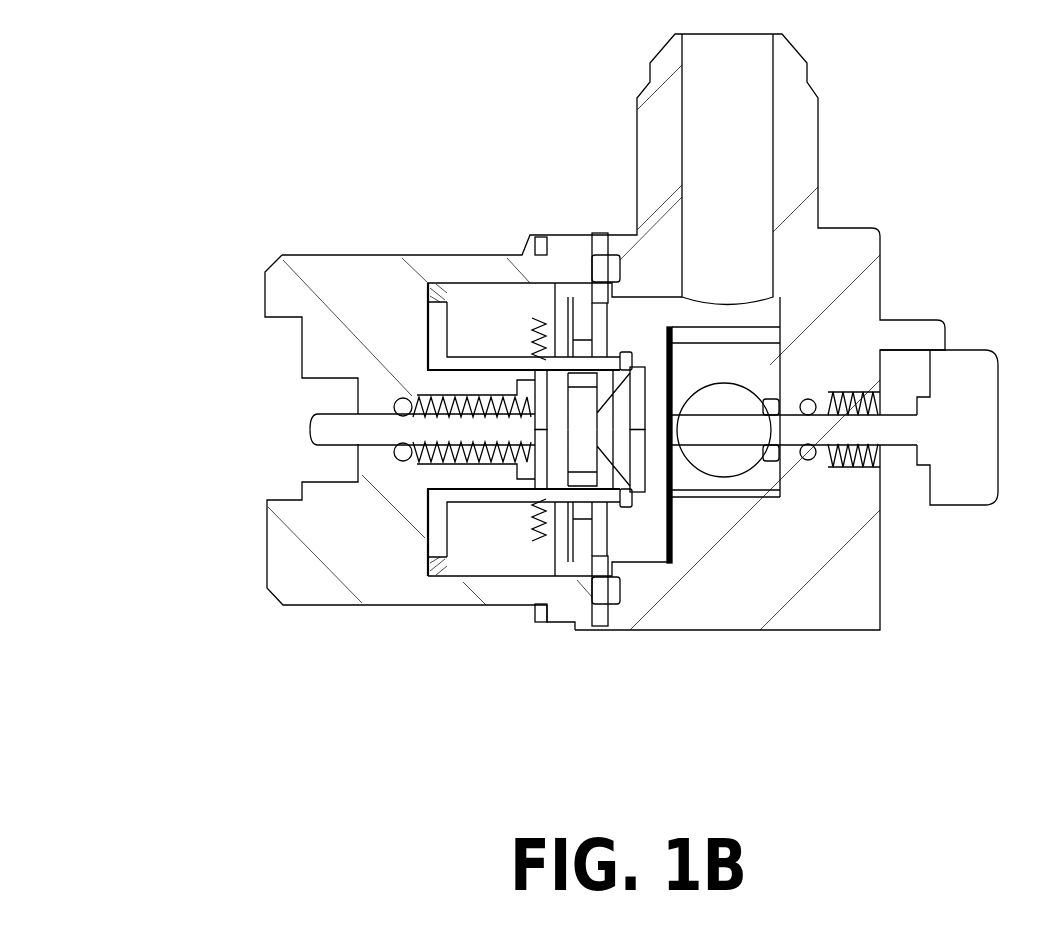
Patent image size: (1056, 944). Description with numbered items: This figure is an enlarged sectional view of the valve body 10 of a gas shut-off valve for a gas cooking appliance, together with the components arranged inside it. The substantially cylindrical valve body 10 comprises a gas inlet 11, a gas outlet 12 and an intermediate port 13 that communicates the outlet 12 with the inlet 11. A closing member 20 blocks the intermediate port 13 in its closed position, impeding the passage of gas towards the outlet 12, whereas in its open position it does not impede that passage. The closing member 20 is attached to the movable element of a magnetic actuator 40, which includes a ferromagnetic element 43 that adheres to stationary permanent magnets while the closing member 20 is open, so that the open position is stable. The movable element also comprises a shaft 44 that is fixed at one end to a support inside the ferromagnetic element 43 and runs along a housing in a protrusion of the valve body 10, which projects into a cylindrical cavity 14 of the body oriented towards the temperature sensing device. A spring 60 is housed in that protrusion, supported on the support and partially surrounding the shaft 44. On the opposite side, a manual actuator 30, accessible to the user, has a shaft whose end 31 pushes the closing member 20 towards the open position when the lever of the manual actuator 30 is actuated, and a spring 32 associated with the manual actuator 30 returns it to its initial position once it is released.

The valve body 10 is at (305, 606).
The gas inlet 11 is at (748, 133).
The gas outlet 12 is at (750, 450).
The intermediate port 13 is at (665, 435).
The cavity 14 is at (515, 585).
The closing member 20 is at (602, 380).
The manual actuator 30 is at (975, 510).
The end 31 is at (672, 425).
The spring 32 is at (882, 505).
The magnetic actuator 40 is at (477, 510).
The ferromagnetic element 43 is at (490, 367).
The shaft 44 is at (382, 433).
The spring 60 is at (445, 410).